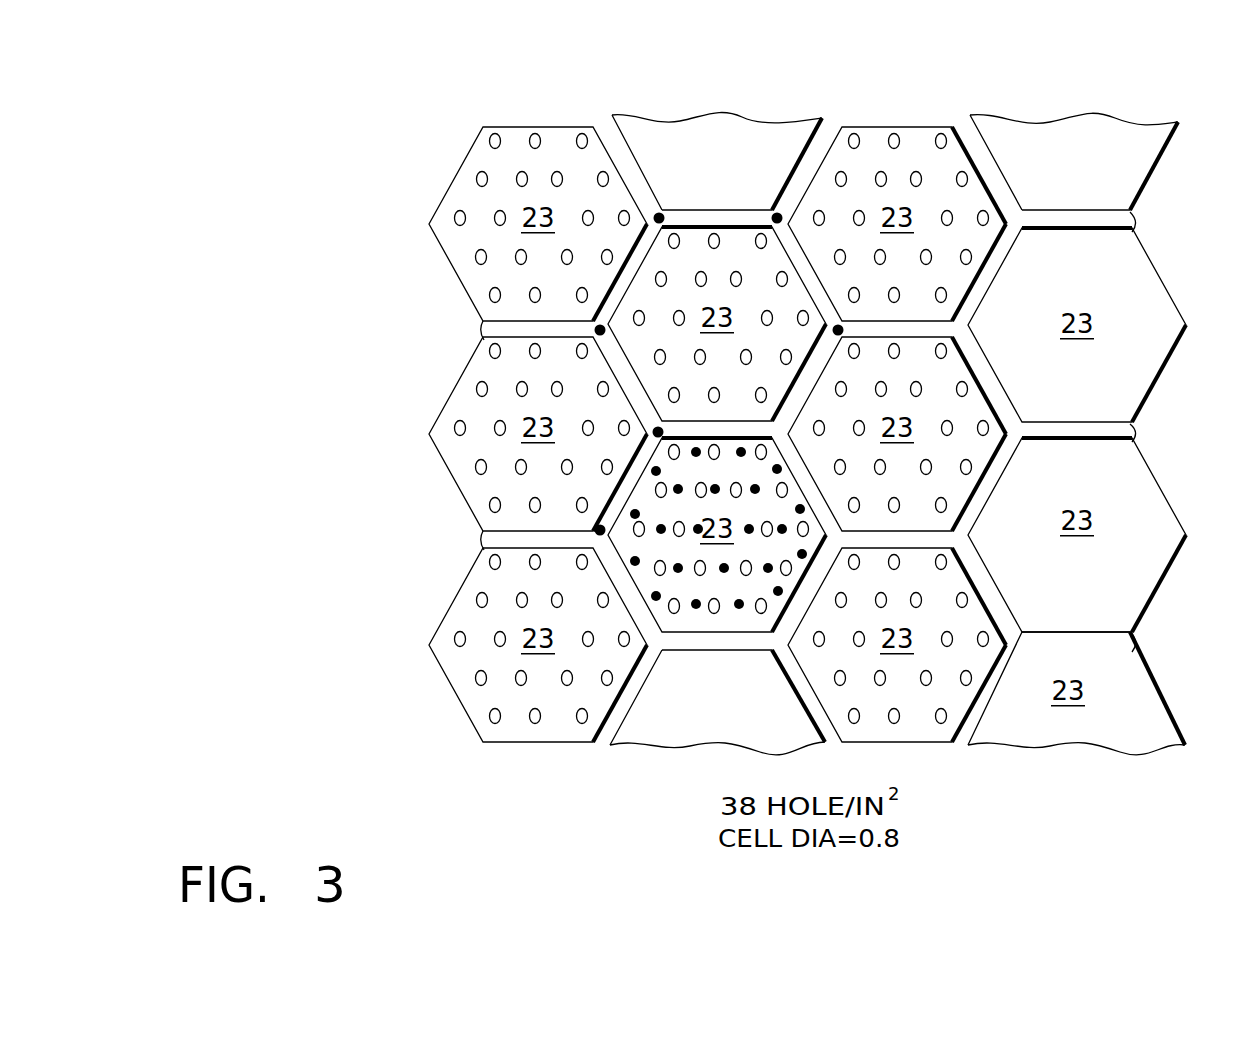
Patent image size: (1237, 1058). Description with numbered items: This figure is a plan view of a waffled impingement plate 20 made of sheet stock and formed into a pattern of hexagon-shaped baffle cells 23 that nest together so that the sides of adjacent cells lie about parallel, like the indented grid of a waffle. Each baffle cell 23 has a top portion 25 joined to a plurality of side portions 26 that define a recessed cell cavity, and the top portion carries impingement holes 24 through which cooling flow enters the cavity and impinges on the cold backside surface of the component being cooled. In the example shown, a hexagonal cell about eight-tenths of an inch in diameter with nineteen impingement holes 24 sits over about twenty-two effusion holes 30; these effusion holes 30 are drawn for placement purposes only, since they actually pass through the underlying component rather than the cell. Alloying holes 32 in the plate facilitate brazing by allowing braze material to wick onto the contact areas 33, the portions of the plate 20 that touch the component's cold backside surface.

The waffled impingement plate 20 is at (436, 116).
The baffle cell 23 is at (784, 403).
The impingement hole 24 is at (495, 293).
The top portion 25 is at (482, 623).
The side portions 26 is at (435, 448).
The effusion holes 30 is at (787, 598).
The alloying hole 32 is at (777, 218).
The contact areas 33 is at (1083, 222).